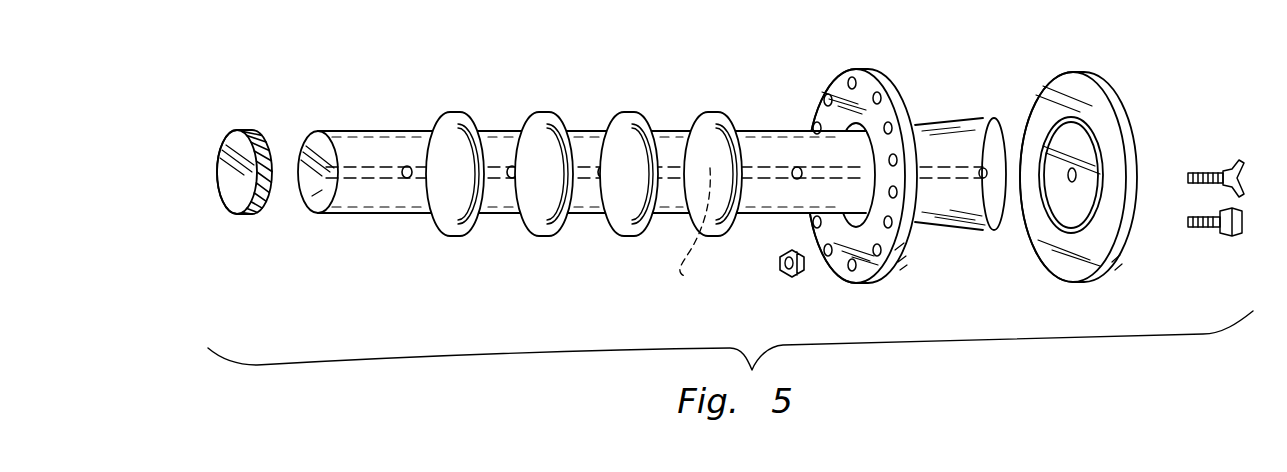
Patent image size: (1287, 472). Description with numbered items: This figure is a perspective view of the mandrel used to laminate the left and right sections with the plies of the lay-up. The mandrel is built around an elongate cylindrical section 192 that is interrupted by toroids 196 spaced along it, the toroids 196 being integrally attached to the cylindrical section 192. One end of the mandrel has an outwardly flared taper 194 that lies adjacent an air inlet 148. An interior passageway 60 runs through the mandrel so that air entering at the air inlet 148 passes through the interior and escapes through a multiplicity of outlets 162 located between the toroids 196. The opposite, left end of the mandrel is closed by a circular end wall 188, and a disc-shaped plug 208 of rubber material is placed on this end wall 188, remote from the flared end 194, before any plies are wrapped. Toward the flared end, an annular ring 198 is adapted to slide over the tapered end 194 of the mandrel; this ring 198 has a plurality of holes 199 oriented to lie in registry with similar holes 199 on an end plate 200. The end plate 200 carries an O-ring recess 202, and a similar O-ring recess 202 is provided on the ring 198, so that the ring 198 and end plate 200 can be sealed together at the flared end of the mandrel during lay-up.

The interior passageway 60 is at (699, 229).
The air inlet 148 is at (986, 166).
The outlets 162 is at (407, 179).
The end wall 188 is at (317, 200).
The elongate cylindrical section 192 is at (378, 141).
The outwardly flared taper 194 is at (937, 125).
The toroids 196 is at (444, 119).
The annular ring 198 is at (838, 260).
The holes 199 is at (878, 92).
The end plate 200 is at (1057, 265).
The O-ring recess 202 is at (1096, 152).
The disc-shaped plug 208 is at (223, 173).